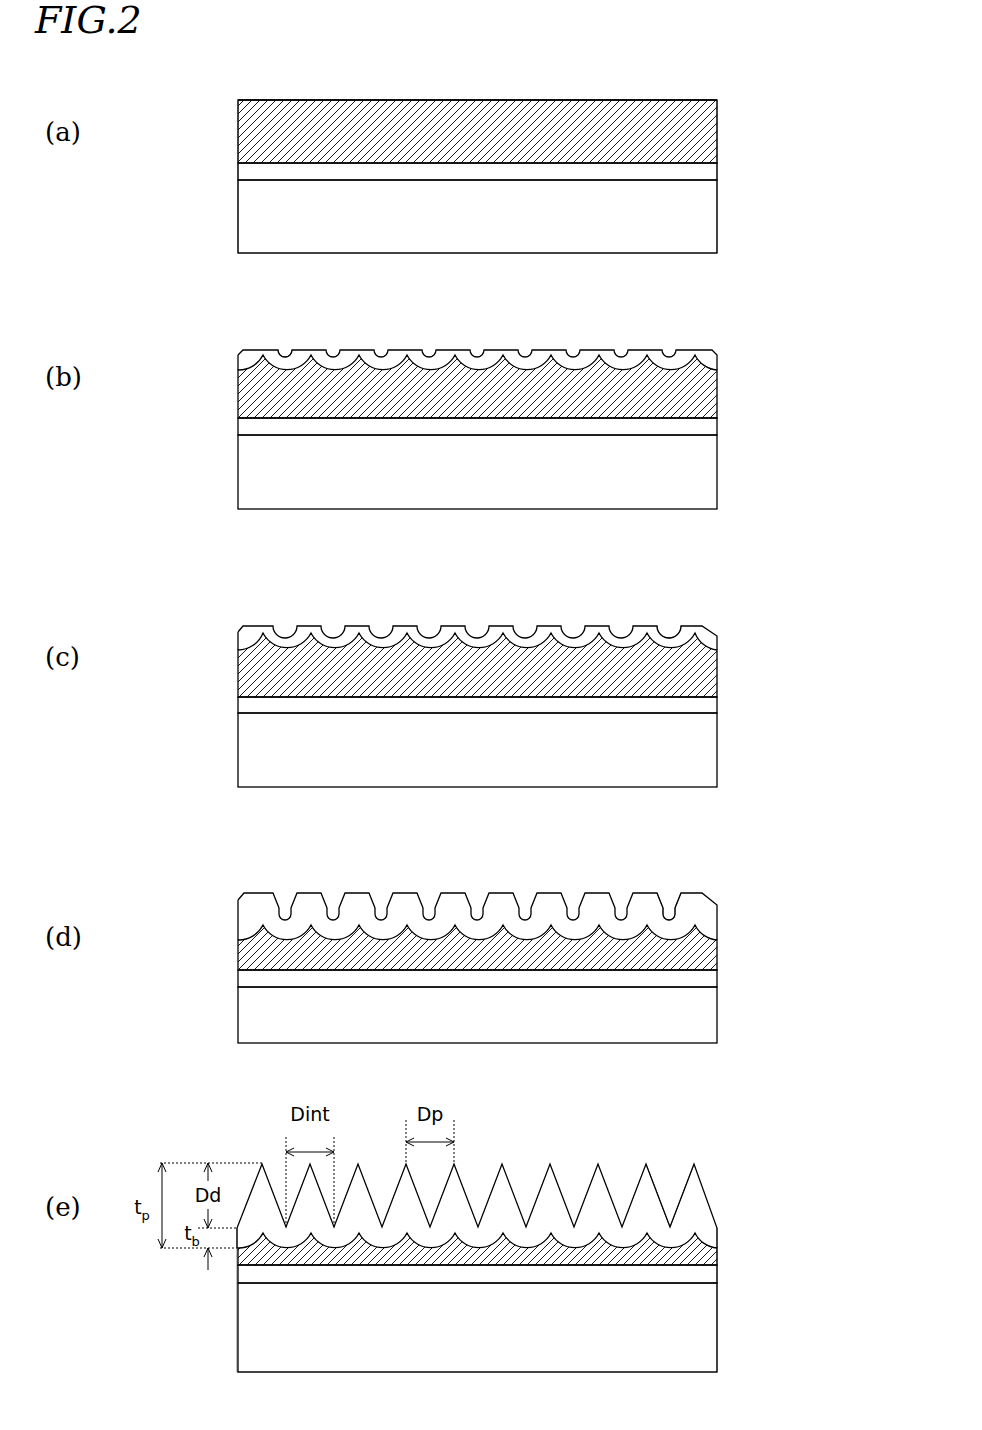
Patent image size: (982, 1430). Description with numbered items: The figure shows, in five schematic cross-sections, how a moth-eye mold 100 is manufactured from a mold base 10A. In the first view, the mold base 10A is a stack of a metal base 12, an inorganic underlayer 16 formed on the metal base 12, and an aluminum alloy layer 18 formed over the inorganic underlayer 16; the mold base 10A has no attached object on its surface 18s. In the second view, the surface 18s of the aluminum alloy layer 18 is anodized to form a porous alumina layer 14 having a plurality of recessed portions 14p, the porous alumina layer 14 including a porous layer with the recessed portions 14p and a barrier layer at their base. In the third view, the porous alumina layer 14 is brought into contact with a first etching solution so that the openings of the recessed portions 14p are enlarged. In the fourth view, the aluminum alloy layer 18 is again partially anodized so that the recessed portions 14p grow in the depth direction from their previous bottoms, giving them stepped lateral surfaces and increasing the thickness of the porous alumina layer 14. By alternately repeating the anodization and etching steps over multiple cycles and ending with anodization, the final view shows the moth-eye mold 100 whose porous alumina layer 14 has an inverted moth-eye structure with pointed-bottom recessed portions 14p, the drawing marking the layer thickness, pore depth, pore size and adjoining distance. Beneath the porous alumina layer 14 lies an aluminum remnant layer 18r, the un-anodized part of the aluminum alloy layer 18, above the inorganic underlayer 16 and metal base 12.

The mold base 10A is at (772, 87).
The metal base 12 is at (705, 220).
The porous alumina layer 14 is at (710, 358).
The recessed portions (micropores) 14p is at (669, 332).
The inorganic underlayer 16 is at (707, 175).
The aluminum alloy layer 18 is at (713, 143).
The surface of the aluminum alloy layer 18s is at (512, 100).
The aluminum remnant layer 18r is at (705, 1258).
The moth-eye mold 100 is at (810, 1150).